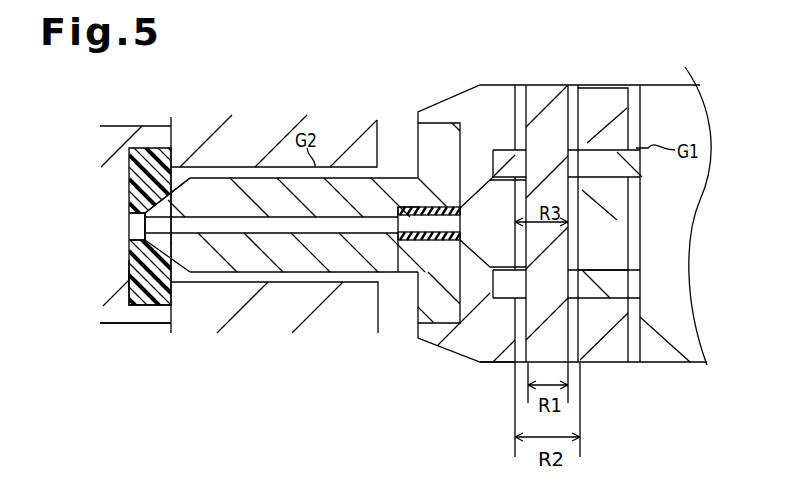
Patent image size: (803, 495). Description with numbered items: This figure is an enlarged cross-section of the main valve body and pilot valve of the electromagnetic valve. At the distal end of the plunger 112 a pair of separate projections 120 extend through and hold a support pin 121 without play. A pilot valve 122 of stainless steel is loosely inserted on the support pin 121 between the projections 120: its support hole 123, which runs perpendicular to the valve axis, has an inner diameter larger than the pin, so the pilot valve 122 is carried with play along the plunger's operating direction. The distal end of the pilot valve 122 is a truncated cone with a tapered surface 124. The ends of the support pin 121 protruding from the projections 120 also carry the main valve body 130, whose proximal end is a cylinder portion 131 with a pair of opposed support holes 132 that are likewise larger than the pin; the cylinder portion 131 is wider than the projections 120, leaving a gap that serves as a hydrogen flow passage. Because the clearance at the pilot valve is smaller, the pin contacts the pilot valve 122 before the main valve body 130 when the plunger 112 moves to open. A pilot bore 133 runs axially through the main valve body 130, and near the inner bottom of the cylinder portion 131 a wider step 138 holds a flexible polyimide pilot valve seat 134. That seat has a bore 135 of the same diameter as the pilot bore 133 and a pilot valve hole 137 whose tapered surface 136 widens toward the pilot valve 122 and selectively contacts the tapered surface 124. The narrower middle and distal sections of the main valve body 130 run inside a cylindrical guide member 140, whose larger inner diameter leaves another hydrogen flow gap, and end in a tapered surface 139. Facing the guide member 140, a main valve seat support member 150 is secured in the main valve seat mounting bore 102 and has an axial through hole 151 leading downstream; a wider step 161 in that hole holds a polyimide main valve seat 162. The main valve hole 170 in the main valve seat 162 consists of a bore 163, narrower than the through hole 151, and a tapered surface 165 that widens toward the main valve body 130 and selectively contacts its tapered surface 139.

The main valve seat mounting bore 102 is at (110, 324).
The plunger 112 is at (653, 90).
The projections 120 is at (454, 122).
The support pin 121 is at (548, 93).
The pilot valve 122 is at (630, 196).
The support hole 123 is at (582, 250).
The tapered surface 124 is at (493, 223).
The main valve body 130 is at (345, 263).
The cylinder portion 131 is at (492, 364).
The support holes 132 is at (520, 95).
The pilot bore 133 is at (313, 214).
The pilot valve seat 134 is at (455, 208).
The bore 135 is at (398, 211).
The tapered surface 136 is at (462, 170).
The pilot valve hole 137 is at (438, 241).
The step 138 is at (412, 245).
The tapered surface 139 is at (129, 280).
The guide member 140 is at (356, 135).
The main valve seat support member 150 is at (112, 138).
The through hole 151 is at (129, 247).
The step 161 is at (158, 148).
The main valve seat 162 is at (172, 290).
The bore 163 is at (129, 215).
The tapered surface 165 is at (172, 198).
The main valve hole 170 is at (129, 228).